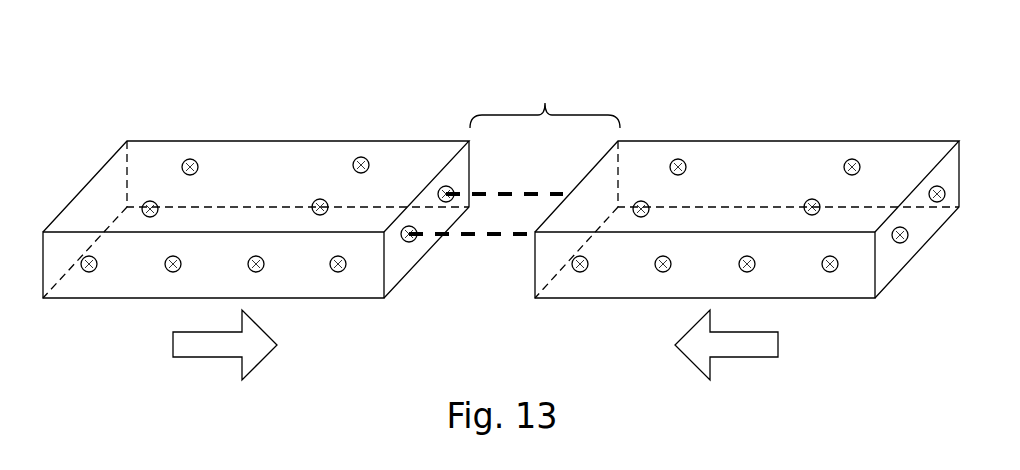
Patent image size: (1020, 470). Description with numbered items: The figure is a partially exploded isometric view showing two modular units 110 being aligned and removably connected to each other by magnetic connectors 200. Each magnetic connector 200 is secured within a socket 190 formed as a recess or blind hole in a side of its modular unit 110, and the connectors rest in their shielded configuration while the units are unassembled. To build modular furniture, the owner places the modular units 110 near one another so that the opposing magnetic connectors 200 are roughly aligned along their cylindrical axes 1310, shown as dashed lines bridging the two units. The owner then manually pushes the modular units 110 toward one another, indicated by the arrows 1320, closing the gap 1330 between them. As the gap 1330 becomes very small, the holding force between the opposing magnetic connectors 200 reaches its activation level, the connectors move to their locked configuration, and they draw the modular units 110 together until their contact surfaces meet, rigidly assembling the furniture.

The modular unit 110 is at (110, 84).
The socket 190 is at (412, 242).
The magnetic connector 200 is at (446, 186).
The cylindrical axes 1310 is at (500, 238).
The pushing direction 1320 is at (475, 345).
The gap 1330 is at (545, 100).